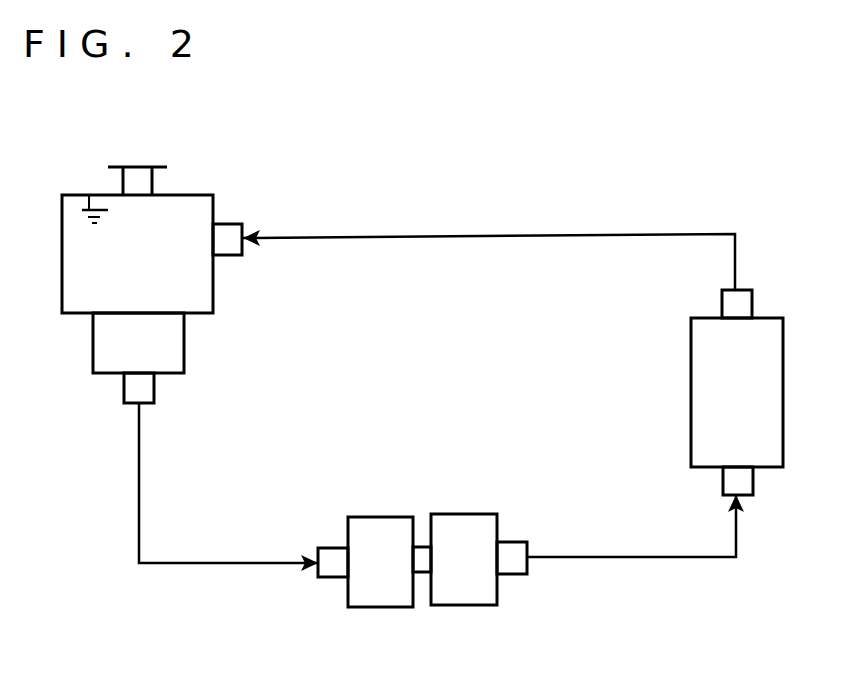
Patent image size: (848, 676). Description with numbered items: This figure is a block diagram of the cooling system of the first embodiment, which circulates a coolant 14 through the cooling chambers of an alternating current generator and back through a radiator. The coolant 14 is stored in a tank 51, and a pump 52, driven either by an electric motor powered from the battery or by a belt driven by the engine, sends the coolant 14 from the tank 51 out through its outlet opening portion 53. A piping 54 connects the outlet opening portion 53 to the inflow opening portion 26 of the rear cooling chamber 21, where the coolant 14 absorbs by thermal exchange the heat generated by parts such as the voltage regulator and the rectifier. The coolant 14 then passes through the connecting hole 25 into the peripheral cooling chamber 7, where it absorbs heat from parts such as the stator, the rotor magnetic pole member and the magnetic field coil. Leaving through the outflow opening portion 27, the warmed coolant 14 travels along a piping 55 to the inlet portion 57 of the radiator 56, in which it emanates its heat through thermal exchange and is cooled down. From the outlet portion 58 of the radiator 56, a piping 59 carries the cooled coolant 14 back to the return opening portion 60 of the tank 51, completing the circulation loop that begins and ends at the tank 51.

The tank 51 is at (62, 213).
The coolant 14 is at (90, 197).
The return opening portion 60 is at (230, 223).
The piping 59 is at (480, 233).
The outlet portion 58 is at (752, 305).
The radiator 56 is at (691, 390).
The inlet portion 57 is at (753, 482).
The piping 55 is at (595, 557).
The outflow opening portion 27 is at (515, 542).
The peripheral cooling chamber 7 is at (467, 514).
The connecting hole 25 is at (421, 572).
The rear cooling chamber 21 is at (376, 517).
The inflow opening portion 26 is at (328, 548).
The piping 54 is at (137, 500).
The outlet opening portion 53 is at (124, 388).
The pump 52 is at (93, 347).